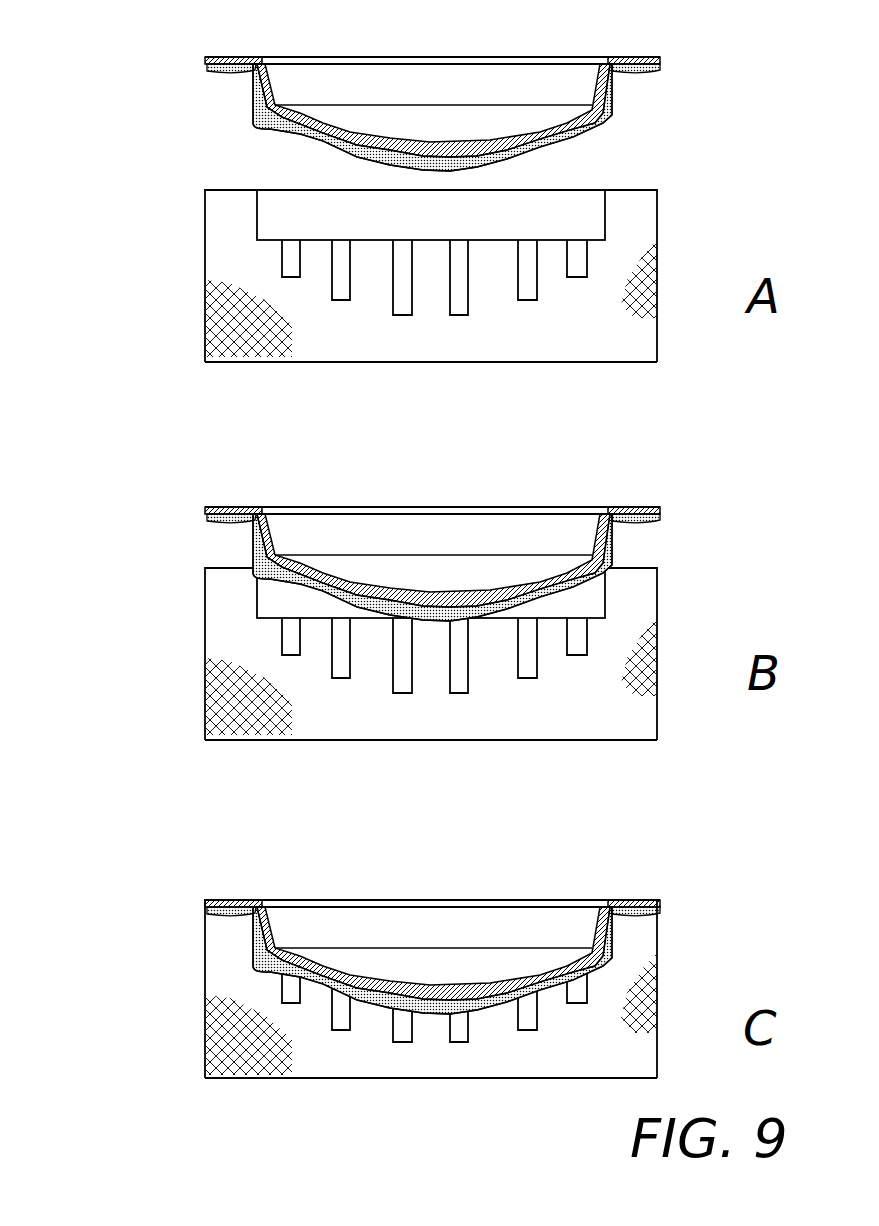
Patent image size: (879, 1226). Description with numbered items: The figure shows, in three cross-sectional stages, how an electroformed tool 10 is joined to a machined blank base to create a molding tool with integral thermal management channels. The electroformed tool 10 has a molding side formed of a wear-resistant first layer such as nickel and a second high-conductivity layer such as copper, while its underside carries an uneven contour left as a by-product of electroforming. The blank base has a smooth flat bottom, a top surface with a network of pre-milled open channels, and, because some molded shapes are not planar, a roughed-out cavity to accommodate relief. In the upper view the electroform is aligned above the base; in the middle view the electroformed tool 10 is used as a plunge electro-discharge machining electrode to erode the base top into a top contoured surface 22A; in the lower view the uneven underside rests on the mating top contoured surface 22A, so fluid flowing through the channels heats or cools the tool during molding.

The electroformed tool 10 is at (397, 53).
The top contoured surface 22A is at (490, 1007).